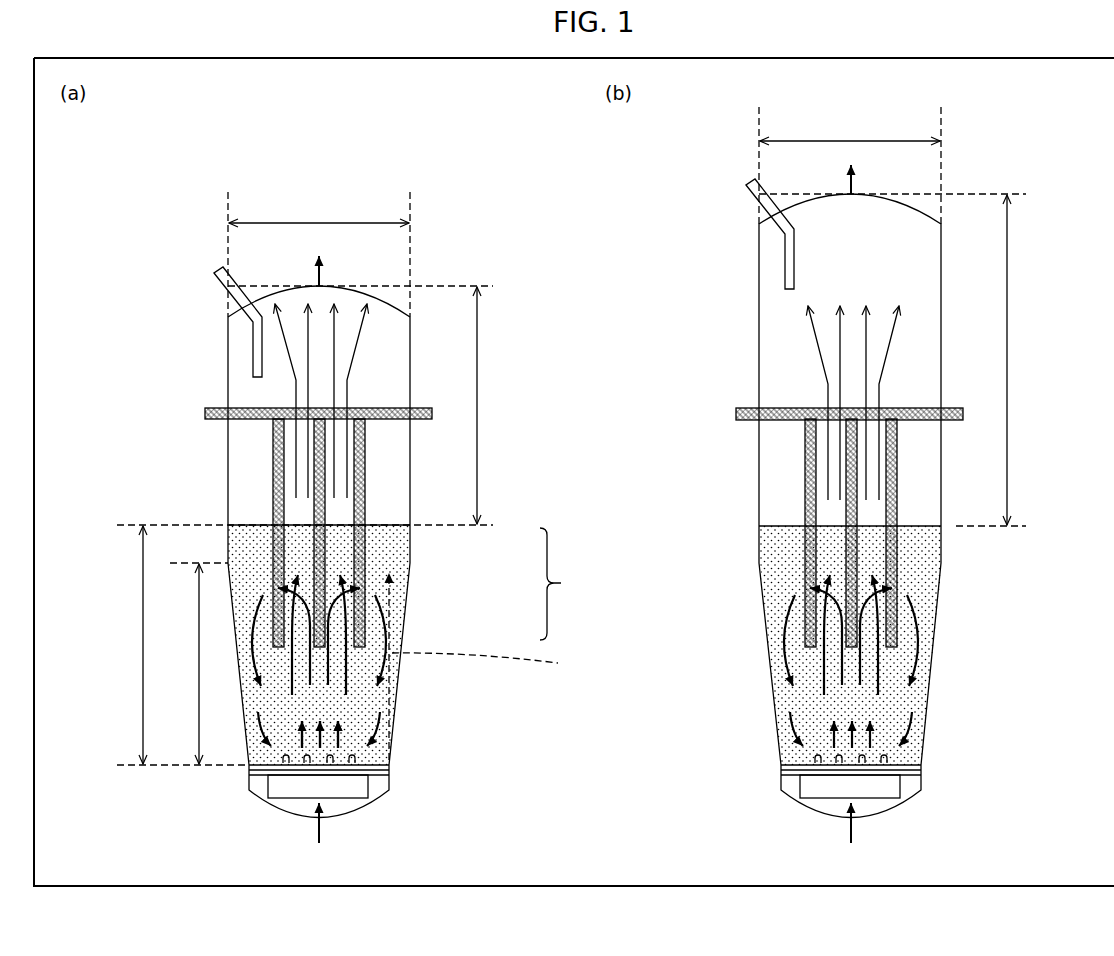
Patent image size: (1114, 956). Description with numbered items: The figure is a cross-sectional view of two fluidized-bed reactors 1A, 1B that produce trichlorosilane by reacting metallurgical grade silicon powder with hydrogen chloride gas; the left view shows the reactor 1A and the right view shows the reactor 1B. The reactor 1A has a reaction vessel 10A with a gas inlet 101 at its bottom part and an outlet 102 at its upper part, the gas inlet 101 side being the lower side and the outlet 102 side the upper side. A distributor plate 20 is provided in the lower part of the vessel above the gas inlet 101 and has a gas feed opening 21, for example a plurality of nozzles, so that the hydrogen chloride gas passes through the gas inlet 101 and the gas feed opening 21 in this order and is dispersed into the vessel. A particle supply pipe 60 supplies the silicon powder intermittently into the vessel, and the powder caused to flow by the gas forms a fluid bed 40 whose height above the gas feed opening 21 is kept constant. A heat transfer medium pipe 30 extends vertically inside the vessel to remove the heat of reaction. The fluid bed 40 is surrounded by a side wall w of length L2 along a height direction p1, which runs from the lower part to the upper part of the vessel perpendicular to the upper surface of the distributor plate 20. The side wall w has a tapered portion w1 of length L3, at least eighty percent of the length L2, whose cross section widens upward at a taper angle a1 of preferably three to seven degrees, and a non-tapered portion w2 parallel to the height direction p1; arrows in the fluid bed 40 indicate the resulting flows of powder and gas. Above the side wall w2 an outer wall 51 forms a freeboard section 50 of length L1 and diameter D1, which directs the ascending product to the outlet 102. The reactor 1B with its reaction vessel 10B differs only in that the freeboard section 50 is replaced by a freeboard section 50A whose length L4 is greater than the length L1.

The fluidized-bed reactor 1A is at (475, 230).
The fluidized-bed reactor 1B is at (1019, 172).
The reaction vessel 10A is at (410, 383).
The reaction vessel 10B is at (942, 302).
The distributor plate 20 is at (373, 767).
The gas feed opening 21 is at (355, 763).
The heat transfer medium pipe 30 is at (273, 452).
The fluid bed 40 is at (255, 533).
The freeboard section 50 is at (227, 382).
The freeboard section 50A is at (757, 331).
The outer wall 51 is at (410, 463).
The particle supply pipe 60 is at (238, 295).
The gas inlet 101 is at (322, 835).
The outlet 102 is at (323, 274).
The diameter D1 is at (584, 212).
The length L1 is at (312, 405).
The length L2 is at (179, 645).
The length L3 is at (199, 663).
The length L4 is at (898, 360).
The side wall w is at (561, 584).
The side wall w1 is at (405, 623).
The side wall w2 is at (410, 545).
The taper angle a1 is at (390, 686).
The height direction p1 is at (489, 664).